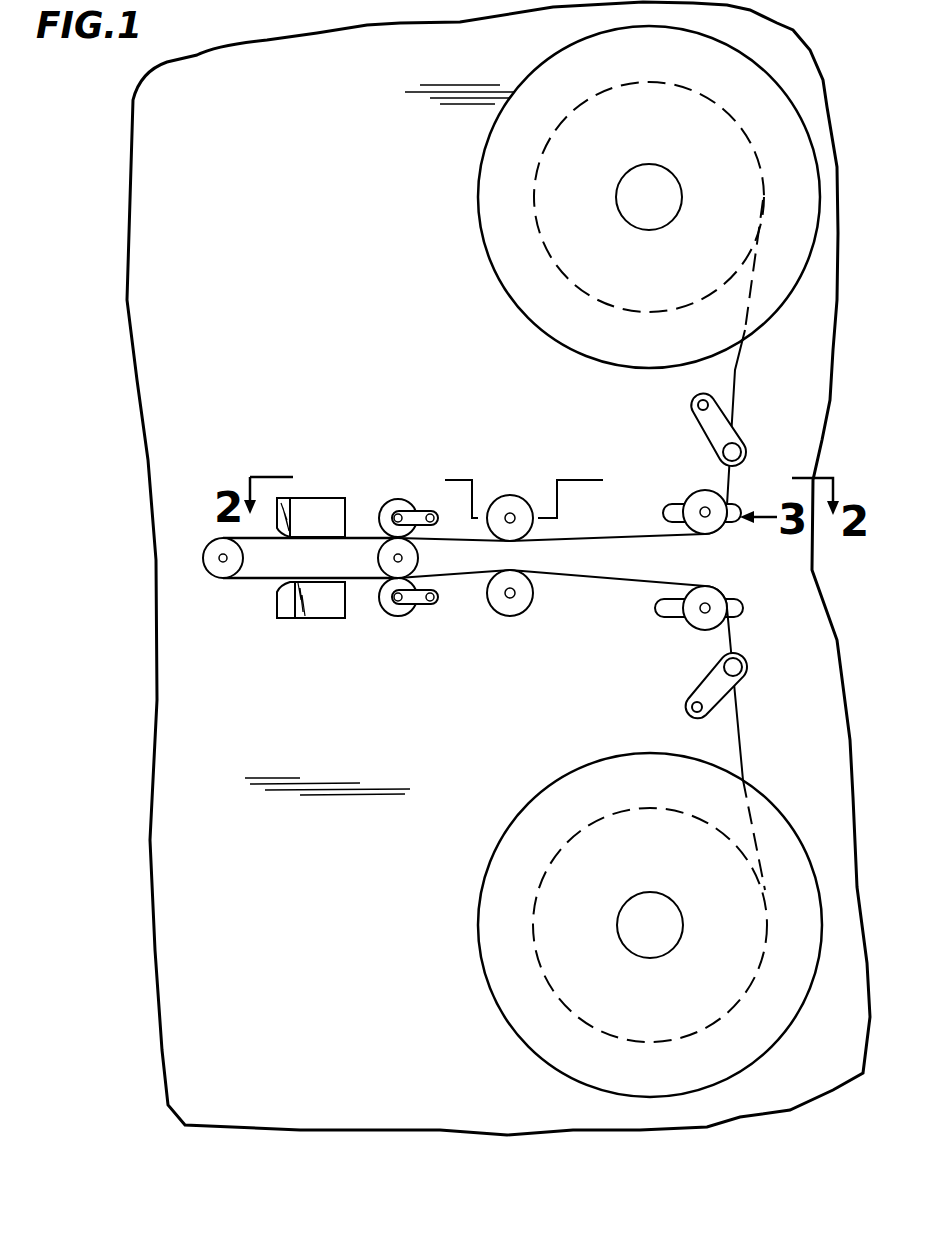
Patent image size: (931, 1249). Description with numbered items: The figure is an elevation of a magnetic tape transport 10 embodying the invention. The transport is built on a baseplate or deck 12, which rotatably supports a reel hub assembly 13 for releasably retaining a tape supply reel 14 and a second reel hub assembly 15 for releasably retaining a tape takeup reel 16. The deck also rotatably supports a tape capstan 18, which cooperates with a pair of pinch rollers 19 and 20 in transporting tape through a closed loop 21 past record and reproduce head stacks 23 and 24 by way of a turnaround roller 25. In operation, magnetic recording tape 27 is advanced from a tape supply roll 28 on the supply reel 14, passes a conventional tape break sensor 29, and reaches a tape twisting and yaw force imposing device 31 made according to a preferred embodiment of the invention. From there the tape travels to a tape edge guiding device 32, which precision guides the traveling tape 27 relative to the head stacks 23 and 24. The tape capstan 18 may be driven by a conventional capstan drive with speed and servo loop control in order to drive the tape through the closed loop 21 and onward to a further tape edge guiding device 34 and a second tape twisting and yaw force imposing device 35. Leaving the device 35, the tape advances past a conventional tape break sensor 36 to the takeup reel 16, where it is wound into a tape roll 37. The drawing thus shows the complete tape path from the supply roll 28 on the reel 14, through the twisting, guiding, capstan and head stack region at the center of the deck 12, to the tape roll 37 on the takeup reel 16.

The magnetic tape transport 10 is at (122, 342).
The baseplate or deck 12 is at (360, 338).
The reel hub assembly 13 is at (662, 184).
The tape supply reel 14 is at (478, 200).
The reel hub assembly 15 is at (630, 906).
The tape takeup reel 16 is at (478, 925).
The tape capstan 18 is at (418, 559).
The pinch roller 19 is at (405, 503).
The pinch roller 20 is at (404, 614).
The closed loop 21 is at (332, 574).
The record and reproduce head stack 23 is at (305, 512).
The record and reproduce head stack 24 is at (315, 612).
The turnaround roller 25 is at (226, 575).
The magnetic recording tape 27 is at (736, 372).
The tape supply roll 28 is at (577, 293).
The tension arm 29 is at (736, 434).
The tape twisting and yaw force imposing device 31 is at (693, 500).
The tape edge guiding device 32 is at (543, 488).
The tape edge guiding device 34 is at (520, 610).
The tape twisting and yaw force imposing device 35 is at (698, 621).
The tape break sensor 36 is at (737, 688).
The tape roll 37 is at (556, 1000).